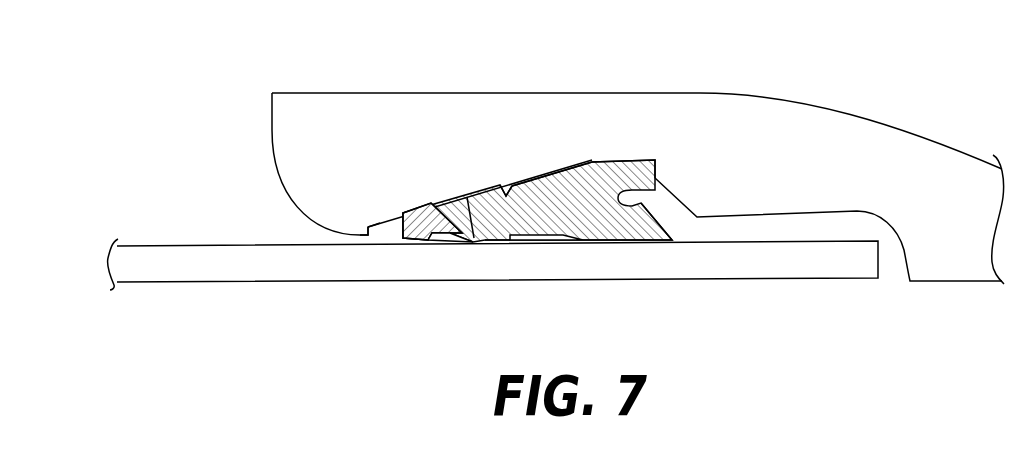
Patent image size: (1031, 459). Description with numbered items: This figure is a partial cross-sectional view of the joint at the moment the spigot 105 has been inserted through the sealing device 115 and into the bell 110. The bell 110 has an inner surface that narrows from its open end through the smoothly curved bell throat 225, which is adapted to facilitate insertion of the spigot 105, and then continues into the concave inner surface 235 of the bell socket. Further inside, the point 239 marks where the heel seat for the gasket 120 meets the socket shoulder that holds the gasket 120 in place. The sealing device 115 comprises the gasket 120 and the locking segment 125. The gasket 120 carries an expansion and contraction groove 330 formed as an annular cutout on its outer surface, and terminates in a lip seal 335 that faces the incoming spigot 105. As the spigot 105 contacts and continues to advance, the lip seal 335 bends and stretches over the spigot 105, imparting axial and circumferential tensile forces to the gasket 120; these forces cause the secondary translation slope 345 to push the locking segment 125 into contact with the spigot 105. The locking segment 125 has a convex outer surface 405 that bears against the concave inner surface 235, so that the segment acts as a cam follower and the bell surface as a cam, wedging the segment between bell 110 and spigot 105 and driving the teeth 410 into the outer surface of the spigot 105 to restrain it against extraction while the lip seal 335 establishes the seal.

The spigot 105 is at (827, 266).
The bell 110 is at (905, 131).
The sealing device 115 is at (512, 236).
The gasket 120 is at (562, 237).
The locking segment 125 is at (427, 218).
The bell throat 225 is at (364, 237).
The concave inner surface 235 is at (489, 194).
The point 239 is at (655, 160).
The expansion and contraction groove 330 is at (507, 190).
The lip seal 335 is at (610, 242).
The secondary translation slope 345 is at (566, 166).
The outer surface 405 is at (433, 205).
The teeth 410 is at (460, 233).